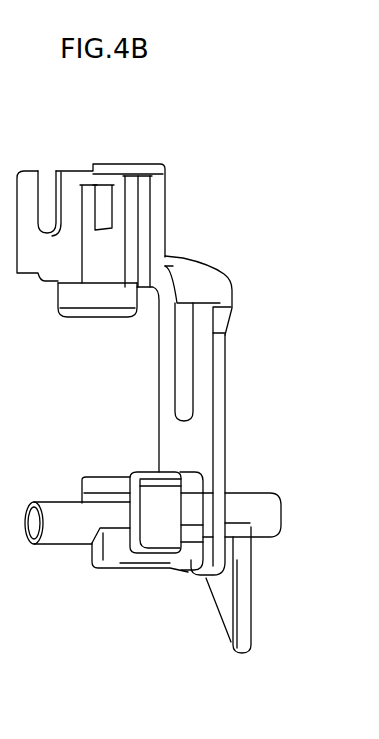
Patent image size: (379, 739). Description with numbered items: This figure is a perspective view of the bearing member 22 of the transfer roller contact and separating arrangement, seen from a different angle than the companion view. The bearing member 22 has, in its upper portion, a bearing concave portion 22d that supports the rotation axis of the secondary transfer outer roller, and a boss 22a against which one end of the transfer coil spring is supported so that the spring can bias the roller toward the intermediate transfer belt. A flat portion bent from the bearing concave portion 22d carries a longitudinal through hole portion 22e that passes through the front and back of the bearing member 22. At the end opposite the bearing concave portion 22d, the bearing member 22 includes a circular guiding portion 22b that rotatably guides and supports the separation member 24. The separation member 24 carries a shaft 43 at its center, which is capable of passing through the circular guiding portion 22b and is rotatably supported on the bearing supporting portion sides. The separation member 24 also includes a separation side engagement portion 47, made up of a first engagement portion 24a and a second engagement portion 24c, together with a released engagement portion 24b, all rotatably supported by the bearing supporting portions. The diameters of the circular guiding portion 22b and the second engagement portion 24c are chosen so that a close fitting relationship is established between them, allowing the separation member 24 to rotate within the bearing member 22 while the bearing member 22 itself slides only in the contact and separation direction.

The bearing member 22 is at (200, 204).
The boss 22a is at (85, 303).
The circular guiding portion 22b is at (182, 473).
The bearing concave portion 22d is at (44, 180).
The longitudinal through hole portion 22e is at (185, 365).
The separation member 24 is at (202, 588).
The first engagement portion 24a is at (147, 480).
The released engagement portion 24b is at (253, 633).
The second engagement portion 24c is at (105, 478).
The shaft 43 is at (62, 533).
The separation side engagement portion 47 is at (152, 580).